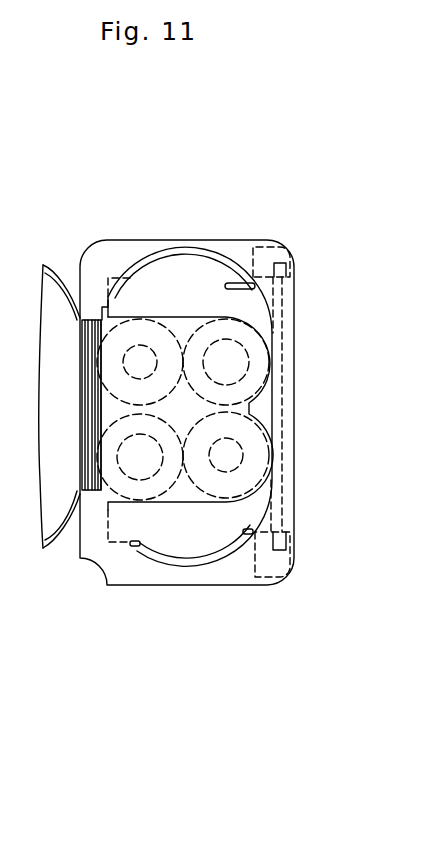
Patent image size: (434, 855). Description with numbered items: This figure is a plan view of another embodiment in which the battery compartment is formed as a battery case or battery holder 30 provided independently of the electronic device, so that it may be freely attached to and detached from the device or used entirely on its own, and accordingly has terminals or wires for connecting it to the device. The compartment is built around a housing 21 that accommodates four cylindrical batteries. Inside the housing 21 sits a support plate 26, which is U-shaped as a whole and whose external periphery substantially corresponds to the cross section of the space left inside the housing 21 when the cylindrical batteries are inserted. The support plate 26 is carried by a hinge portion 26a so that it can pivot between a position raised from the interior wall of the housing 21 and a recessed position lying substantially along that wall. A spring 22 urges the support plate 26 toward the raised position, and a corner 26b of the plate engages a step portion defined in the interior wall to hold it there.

The housing 21 is at (206, 262).
The spring 22 is at (230, 281).
The support plate 26 is at (158, 273).
The hinge portion 26a is at (284, 398).
The corner 26b is at (283, 287).
The battery holder 30 is at (248, 592).